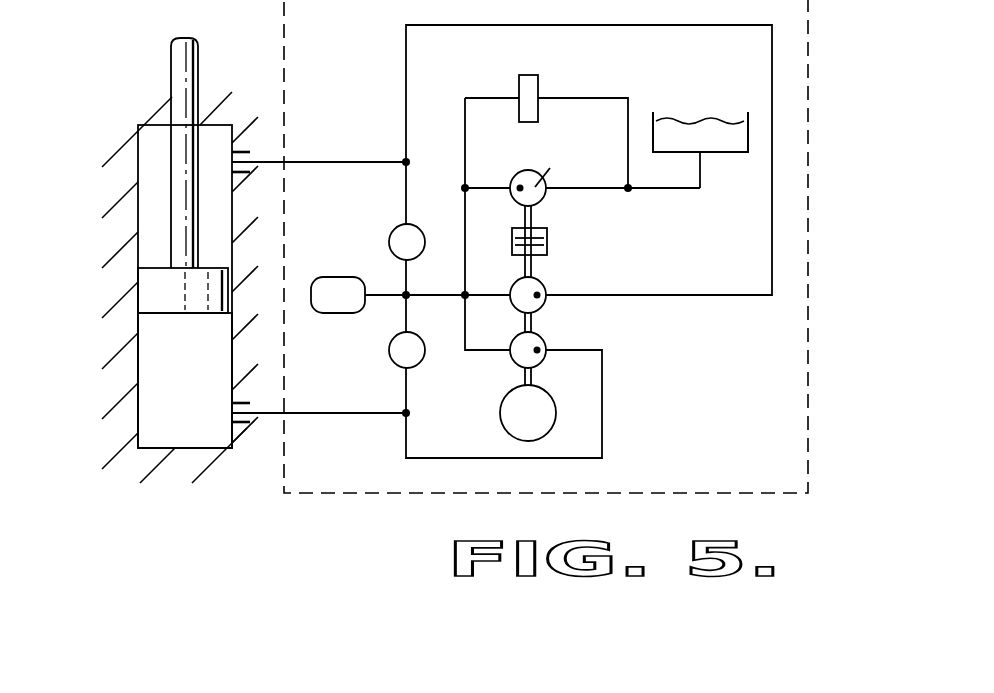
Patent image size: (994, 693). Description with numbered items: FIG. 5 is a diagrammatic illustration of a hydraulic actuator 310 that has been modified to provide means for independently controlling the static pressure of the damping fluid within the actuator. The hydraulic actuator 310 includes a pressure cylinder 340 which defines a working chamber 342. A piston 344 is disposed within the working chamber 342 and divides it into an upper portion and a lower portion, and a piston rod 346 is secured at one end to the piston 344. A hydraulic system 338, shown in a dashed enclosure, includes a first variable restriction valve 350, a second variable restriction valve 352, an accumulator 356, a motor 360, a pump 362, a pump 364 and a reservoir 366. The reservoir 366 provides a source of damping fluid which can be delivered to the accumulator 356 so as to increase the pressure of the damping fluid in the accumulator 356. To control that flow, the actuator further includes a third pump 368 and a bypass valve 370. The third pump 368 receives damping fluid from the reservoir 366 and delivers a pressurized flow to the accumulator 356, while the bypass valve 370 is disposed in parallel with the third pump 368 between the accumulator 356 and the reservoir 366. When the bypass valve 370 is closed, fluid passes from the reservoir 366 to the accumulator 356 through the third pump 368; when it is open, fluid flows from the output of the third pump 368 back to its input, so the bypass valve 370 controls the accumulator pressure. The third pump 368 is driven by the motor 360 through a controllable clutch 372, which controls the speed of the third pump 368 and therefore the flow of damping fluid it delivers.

The hydraulic actuator 310 is at (155, 493).
The hydraulic system 338 is at (808, 380).
The pressure cylinder 340 is at (207, 440).
The working chamber 342 is at (140, 203).
The piston 344 is at (150, 295).
The piston rod 346 is at (197, 62).
The first variable restriction valve 350 is at (398, 236).
The second variable restriction valve 352 is at (396, 356).
The accumulator 356 is at (326, 288).
The motor 360 is at (512, 422).
The pump 362 is at (538, 306).
The pump 364 is at (518, 358).
The reservoir 366 is at (727, 153).
The third pump 368 is at (535, 186).
The bypass valve 370 is at (530, 87).
The controllable clutch 372 is at (548, 242).